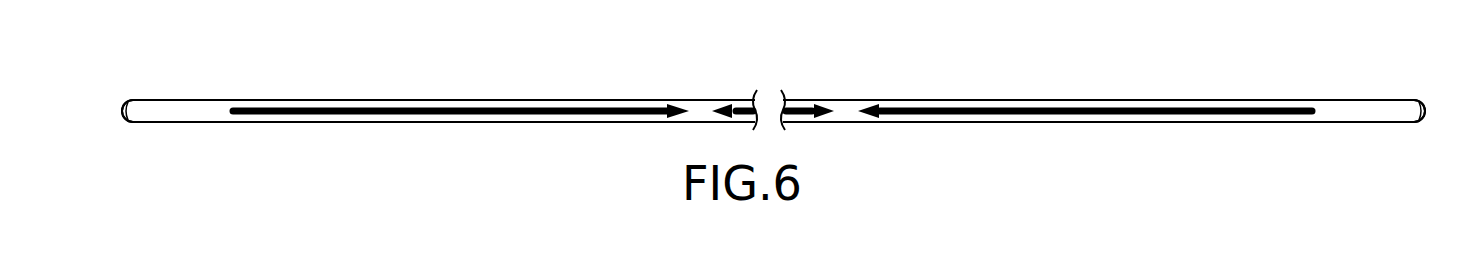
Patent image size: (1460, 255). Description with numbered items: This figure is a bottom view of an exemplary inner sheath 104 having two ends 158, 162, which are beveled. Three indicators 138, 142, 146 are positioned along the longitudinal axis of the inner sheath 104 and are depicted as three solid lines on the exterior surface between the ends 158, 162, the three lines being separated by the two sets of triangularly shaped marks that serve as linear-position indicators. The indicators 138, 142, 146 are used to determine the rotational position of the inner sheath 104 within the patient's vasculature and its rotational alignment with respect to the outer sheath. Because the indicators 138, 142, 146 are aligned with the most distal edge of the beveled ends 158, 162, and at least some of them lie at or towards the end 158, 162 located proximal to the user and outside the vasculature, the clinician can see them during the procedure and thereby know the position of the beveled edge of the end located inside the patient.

The inner sheath 104 is at (1351, 108).
The indicator 138 is at (500, 113).
The indicator 142 is at (793, 117).
The indicator 146 is at (1102, 113).
The end 158 is at (123, 101).
The end 162 is at (1421, 101).